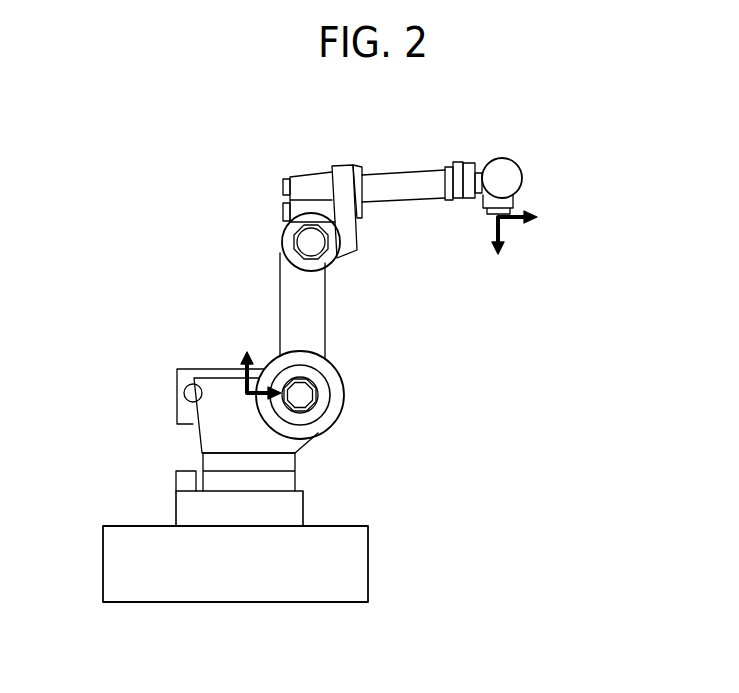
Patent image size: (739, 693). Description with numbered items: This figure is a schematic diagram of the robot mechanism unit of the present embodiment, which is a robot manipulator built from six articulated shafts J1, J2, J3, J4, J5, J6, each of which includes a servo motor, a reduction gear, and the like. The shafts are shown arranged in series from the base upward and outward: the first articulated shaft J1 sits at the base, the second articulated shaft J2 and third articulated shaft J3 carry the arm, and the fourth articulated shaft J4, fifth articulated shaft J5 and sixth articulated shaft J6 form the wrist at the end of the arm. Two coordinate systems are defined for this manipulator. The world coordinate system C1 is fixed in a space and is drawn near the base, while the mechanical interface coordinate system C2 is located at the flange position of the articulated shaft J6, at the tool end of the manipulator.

The articulated shaft J1 is at (248, 465).
The articulated shaft J2 is at (320, 392).
The articulated shaft J3 is at (292, 241).
The articulated shaft J4 is at (463, 180).
The articulated shaft J5 is at (500, 178).
The articulated shaft J6 is at (510, 202).
The world coordinate system C1 is at (238, 379).
The mechanical interface coordinate system C2 is at (515, 222).